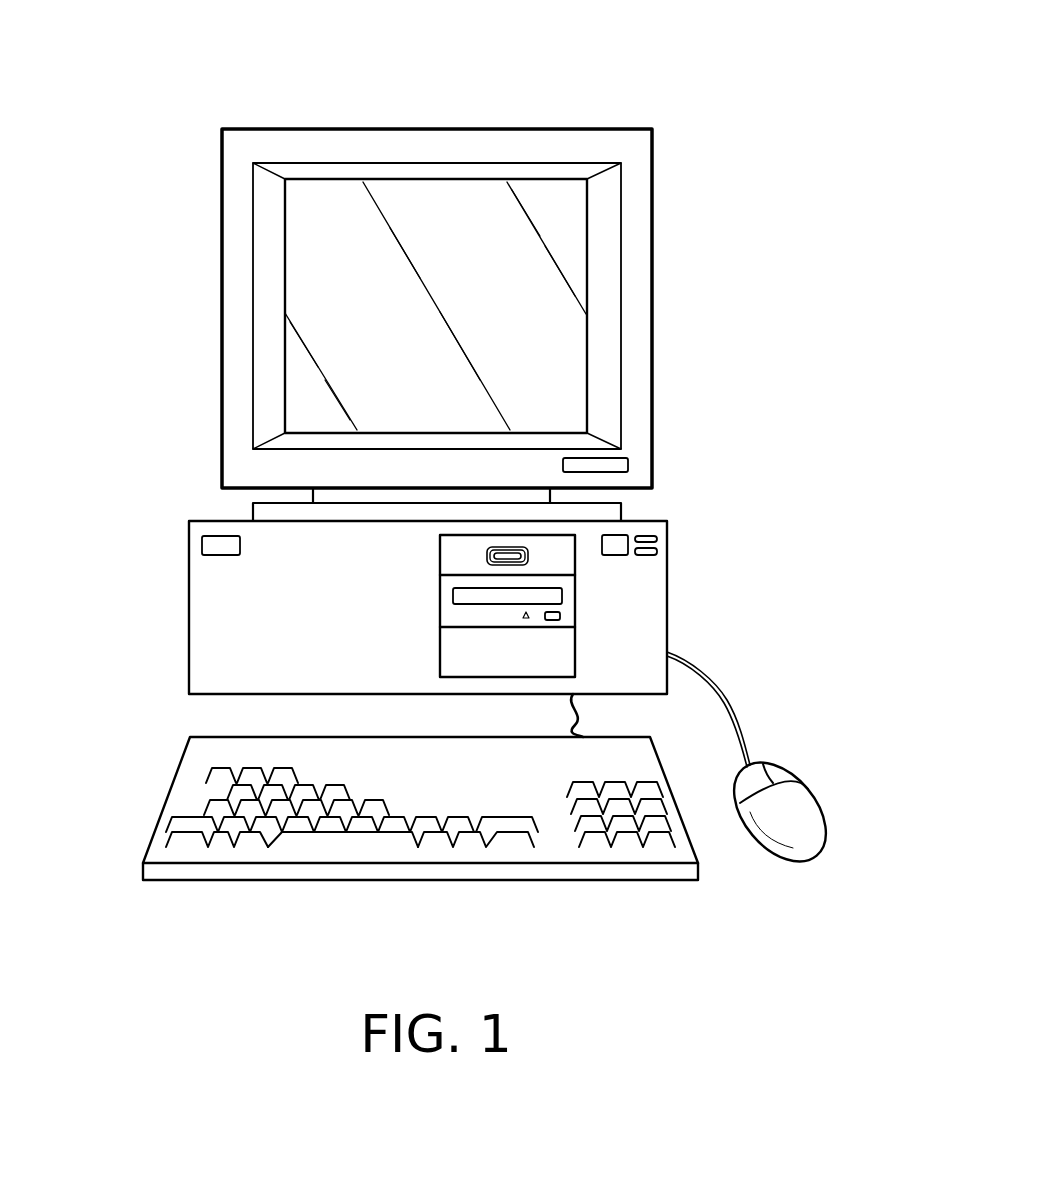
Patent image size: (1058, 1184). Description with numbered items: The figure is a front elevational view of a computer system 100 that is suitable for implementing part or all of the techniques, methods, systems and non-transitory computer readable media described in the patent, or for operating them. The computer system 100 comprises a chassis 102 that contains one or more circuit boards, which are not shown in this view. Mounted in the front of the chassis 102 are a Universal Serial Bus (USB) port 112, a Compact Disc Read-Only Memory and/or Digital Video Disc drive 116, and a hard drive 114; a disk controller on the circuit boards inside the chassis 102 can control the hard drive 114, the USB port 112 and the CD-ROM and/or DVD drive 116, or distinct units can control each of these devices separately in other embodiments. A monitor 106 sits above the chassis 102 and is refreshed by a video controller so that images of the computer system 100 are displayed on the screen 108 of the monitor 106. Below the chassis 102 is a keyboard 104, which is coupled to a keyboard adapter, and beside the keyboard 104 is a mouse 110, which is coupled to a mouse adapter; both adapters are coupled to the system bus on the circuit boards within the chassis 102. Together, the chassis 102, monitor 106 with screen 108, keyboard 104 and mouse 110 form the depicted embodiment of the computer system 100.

The computer system 100 is at (650, 91).
The chassis 102 is at (189, 608).
The keyboard 104 is at (168, 800).
The monitor 106 is at (307, 128).
The screen 108 is at (340, 313).
The mouse 110 is at (803, 797).
The Universal Serial Bus (USB) port 112 is at (528, 552).
The hard drive 114 is at (565, 652).
The CD-ROM and/or DVD drive 116 is at (566, 605).